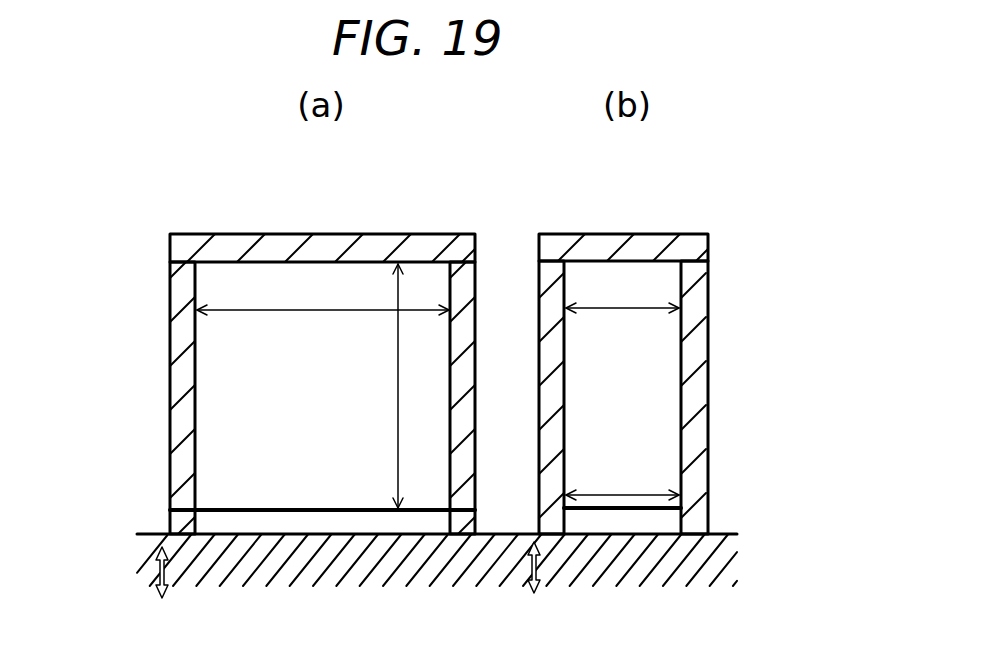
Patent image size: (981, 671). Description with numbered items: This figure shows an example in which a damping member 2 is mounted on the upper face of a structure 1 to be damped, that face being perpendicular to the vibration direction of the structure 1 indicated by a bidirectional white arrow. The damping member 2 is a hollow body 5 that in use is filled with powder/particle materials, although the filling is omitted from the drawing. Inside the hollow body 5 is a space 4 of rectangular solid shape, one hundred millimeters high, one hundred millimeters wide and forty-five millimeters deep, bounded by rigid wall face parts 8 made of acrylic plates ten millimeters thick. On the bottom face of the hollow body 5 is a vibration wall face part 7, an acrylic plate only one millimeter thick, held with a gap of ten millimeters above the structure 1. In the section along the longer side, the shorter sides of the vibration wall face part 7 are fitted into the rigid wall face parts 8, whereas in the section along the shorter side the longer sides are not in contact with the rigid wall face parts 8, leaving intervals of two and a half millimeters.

The structure to be damped 1 is at (148, 535).
The damping member 2 is at (168, 293).
The space 4 is at (217, 334).
The hollow body 5 is at (170, 402).
The vibration wall face part 7 is at (253, 510).
The rigid wall face parts 8 is at (367, 233).